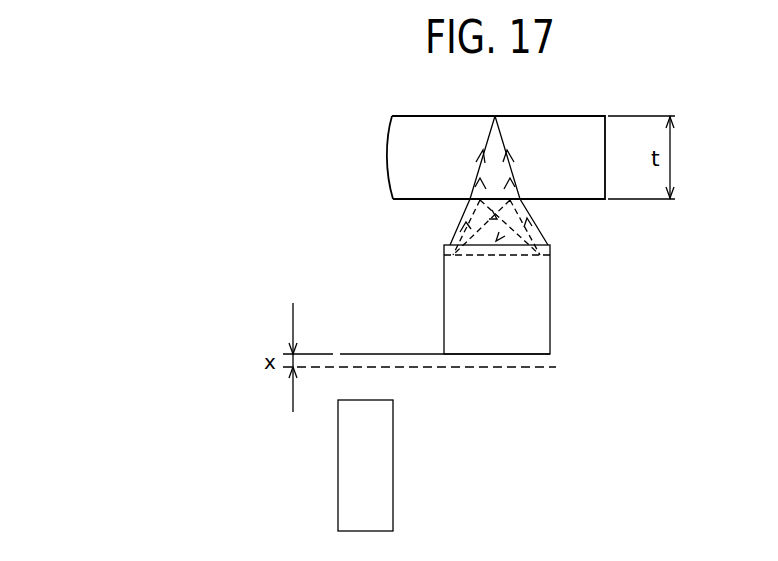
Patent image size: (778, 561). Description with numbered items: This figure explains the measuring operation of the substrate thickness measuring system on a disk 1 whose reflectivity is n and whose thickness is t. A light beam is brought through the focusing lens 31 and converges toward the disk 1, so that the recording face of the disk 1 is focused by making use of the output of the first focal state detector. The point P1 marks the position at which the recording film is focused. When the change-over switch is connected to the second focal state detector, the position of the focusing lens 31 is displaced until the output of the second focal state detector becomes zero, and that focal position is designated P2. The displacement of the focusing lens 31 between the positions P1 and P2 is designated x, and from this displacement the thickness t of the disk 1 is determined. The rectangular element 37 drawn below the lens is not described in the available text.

The disk 1 is at (535, 128).
The focusing lens 31 is at (540, 279).
The photodetector 37 is at (375, 468).
The point P1 is at (553, 357).
The position P2 is at (553, 367).